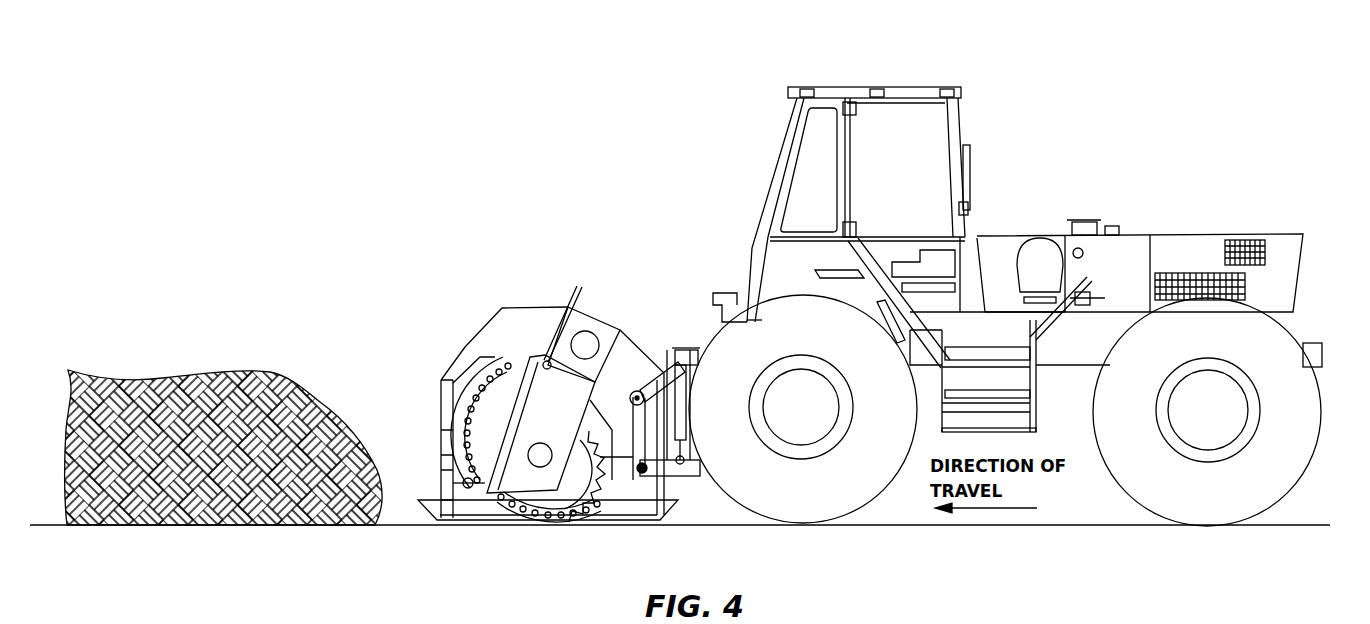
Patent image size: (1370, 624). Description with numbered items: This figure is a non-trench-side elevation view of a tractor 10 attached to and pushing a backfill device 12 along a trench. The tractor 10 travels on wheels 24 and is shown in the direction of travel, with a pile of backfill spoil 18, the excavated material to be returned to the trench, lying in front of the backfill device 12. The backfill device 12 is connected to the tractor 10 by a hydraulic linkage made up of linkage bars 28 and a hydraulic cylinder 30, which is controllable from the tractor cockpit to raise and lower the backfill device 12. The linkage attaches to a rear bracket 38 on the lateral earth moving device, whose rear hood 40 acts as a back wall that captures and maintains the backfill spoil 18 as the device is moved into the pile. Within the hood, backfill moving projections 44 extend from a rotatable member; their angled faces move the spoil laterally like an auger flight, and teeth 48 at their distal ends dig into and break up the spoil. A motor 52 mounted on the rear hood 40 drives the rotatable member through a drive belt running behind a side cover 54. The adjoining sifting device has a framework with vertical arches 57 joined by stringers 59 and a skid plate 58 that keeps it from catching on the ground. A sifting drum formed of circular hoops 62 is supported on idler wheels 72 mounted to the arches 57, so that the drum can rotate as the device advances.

The tractor 10 is at (921, 86).
The backfill device 12 is at (548, 214).
The backfill spoil 18 is at (213, 373).
The wheels 24 is at (875, 499).
The linkage bars 28 is at (660, 375).
The hydraulic cylinder 30 is at (683, 423).
The rear bracket 38 is at (628, 398).
The rear hood 40 is at (620, 455).
The backfill moving projections 44 is at (565, 495).
The teeth 48 is at (594, 470).
The motor 52 is at (600, 330).
The side cover 54 is at (574, 418).
The arches 57 is at (437, 405).
The skid plate 58 is at (428, 512).
The stringers 59 is at (447, 372).
The hoops 62 is at (545, 522).
The idler wheels 72 is at (463, 490).